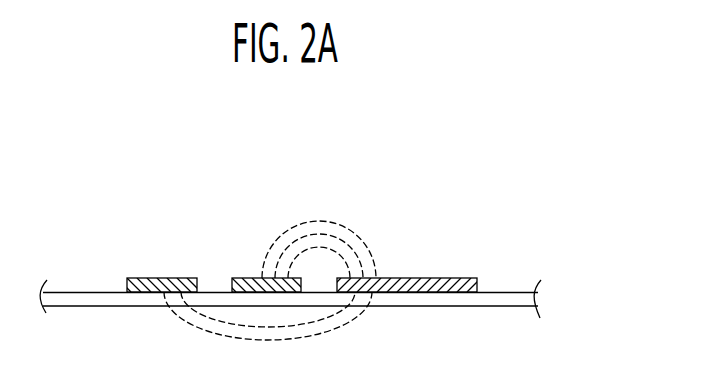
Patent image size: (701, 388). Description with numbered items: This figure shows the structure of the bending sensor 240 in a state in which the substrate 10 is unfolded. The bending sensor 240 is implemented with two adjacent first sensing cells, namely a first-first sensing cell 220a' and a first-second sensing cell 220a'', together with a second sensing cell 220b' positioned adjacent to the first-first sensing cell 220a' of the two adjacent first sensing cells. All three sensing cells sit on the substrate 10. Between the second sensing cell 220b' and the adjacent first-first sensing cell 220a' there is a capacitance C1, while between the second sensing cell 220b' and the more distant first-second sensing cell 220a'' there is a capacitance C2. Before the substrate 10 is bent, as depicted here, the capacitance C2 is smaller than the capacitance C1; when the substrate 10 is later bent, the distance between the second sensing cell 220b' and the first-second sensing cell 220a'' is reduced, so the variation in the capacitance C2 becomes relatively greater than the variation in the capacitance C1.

The substrate 10 is at (522, 298).
The (1-1)-th sensing cell 220a' is at (261, 244).
The (1-2)-th sensing cell 220a'' is at (164, 326).
The second sensing cell 220b' is at (409, 327).
The capacitance C1 is at (319, 235).
The capacitance C2 is at (268, 332).
The bending sensor 240 is at (413, 200).